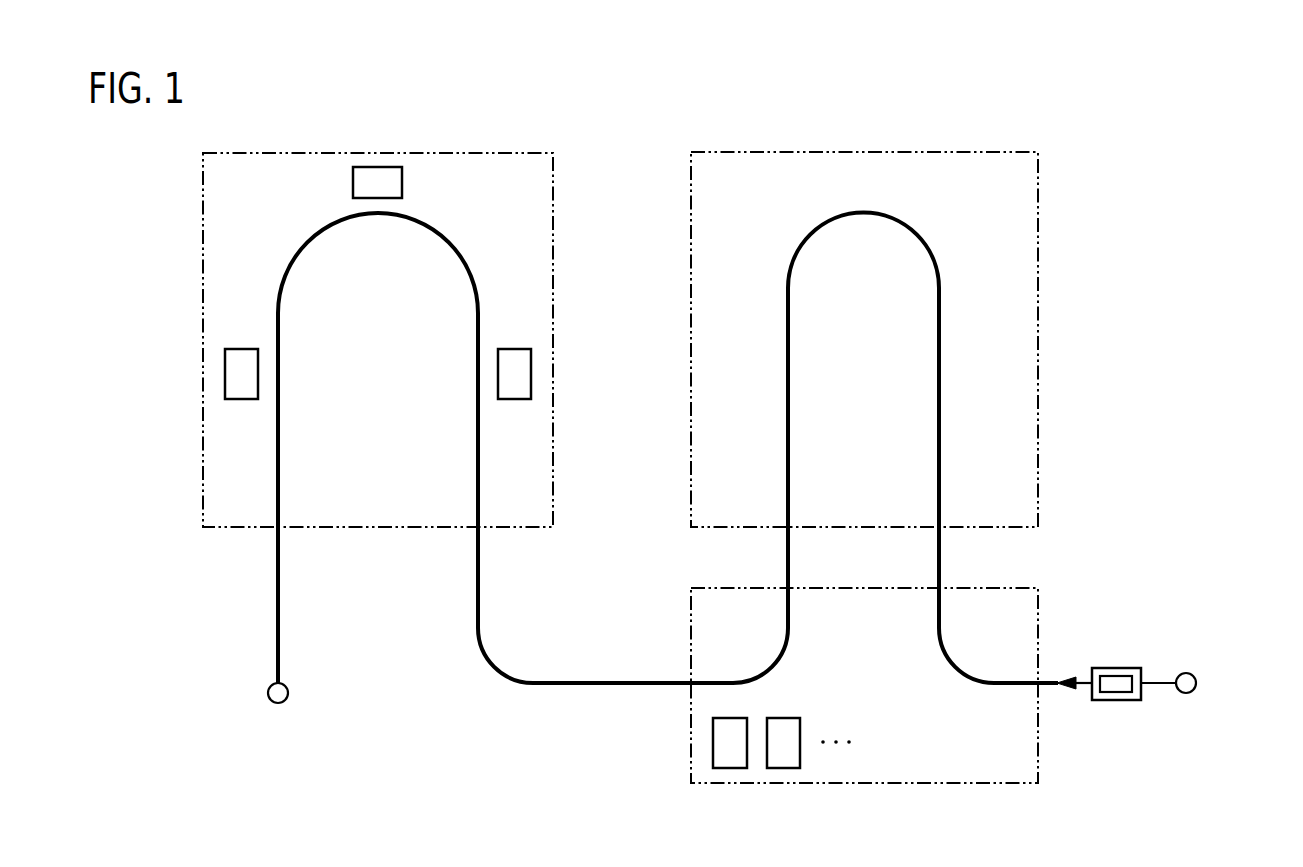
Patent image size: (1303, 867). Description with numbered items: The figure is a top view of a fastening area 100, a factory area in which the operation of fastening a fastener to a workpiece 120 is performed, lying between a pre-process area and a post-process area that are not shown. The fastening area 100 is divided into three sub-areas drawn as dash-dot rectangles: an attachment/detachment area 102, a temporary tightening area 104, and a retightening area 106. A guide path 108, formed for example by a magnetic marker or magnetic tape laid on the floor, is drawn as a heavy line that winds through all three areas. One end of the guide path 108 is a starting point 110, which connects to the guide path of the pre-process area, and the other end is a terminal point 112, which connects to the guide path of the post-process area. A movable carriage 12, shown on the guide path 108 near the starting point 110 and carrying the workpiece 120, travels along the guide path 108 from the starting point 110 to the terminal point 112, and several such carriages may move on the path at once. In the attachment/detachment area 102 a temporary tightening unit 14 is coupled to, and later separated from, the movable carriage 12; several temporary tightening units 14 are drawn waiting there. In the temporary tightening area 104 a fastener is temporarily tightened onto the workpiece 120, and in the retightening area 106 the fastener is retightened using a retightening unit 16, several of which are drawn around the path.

The fastening area 100 is at (1137, 116).
The attachment/detachment area 102 is at (946, 784).
The temporary tightening area 104 is at (889, 152).
The retightening area 106 is at (458, 153).
The guide path 108 is at (613, 685).
The starting point 110 is at (1192, 674).
The terminal point 112 is at (268, 692).
The movable carriage 12 is at (1116, 679).
The workpiece 120 is at (1116, 690).
The temporary tightening unit 14 is at (730, 769).
The retightening unit 16 is at (373, 167).